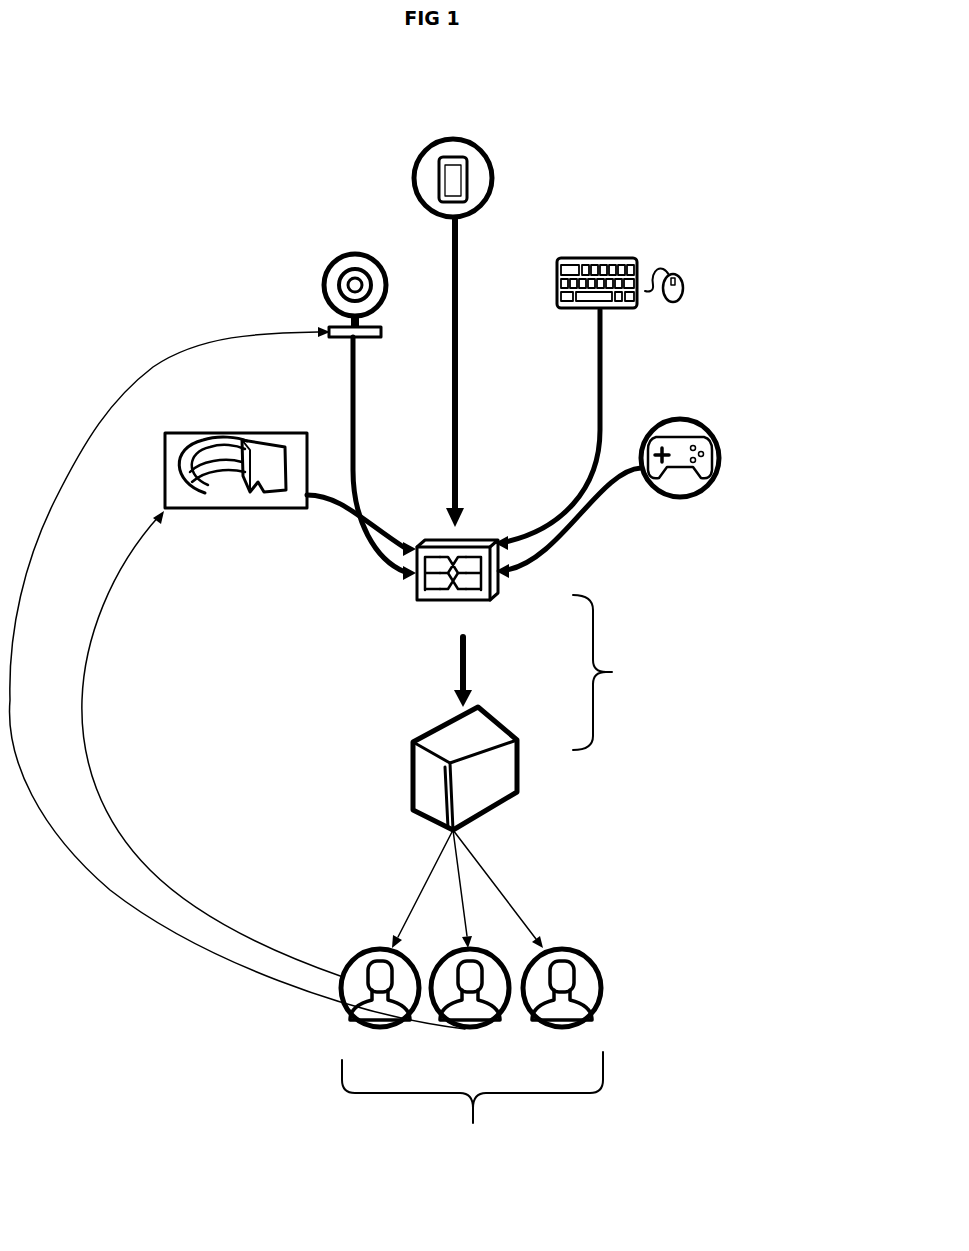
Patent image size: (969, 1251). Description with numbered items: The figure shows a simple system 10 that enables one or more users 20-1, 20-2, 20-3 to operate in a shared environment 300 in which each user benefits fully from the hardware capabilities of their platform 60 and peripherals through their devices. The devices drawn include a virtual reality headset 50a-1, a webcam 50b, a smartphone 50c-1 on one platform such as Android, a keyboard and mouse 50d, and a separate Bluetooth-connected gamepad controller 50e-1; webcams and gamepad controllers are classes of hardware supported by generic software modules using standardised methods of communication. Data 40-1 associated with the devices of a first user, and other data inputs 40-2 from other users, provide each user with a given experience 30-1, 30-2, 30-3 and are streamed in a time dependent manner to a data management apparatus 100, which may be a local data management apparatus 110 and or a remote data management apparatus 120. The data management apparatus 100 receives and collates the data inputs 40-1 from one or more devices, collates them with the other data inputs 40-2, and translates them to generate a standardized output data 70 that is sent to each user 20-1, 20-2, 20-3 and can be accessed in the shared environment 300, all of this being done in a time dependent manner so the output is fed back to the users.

The system 10 is at (659, 161).
The first user 20-1 is at (380, 1011).
The second user 20-2 is at (470, 1010).
The third spectator/user 20-3 is at (562, 1010).
The experience 30-1 is at (259, 521).
The experience 30-2 is at (402, 182).
The third player using game controller 30-3 is at (731, 440).
The data 40-1 is at (317, 520).
The data inputs 40-2 is at (363, 443).
The virtual reality headset 50a-1 is at (236, 452).
The webcam 50b is at (355, 280).
The smartphone 50c-1 is at (453, 162).
The keyboard and mouse 50d is at (620, 266).
The gamepad controller 50e-1 is at (680, 442).
The platform 60 is at (160, 462).
The standardized output data 70 is at (467, 889).
The data management apparatus 100 is at (557, 672).
The local data management apparatus 110 is at (500, 604).
The remote data management apparatus 120 is at (523, 753).
The shared environment 300 is at (472, 1106).